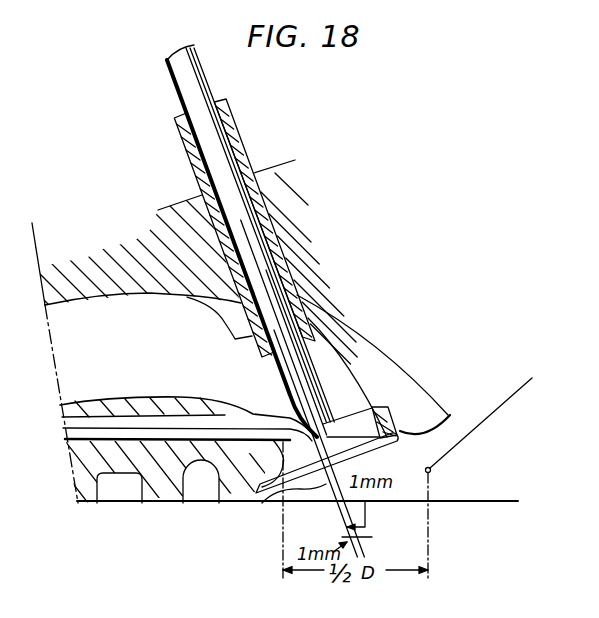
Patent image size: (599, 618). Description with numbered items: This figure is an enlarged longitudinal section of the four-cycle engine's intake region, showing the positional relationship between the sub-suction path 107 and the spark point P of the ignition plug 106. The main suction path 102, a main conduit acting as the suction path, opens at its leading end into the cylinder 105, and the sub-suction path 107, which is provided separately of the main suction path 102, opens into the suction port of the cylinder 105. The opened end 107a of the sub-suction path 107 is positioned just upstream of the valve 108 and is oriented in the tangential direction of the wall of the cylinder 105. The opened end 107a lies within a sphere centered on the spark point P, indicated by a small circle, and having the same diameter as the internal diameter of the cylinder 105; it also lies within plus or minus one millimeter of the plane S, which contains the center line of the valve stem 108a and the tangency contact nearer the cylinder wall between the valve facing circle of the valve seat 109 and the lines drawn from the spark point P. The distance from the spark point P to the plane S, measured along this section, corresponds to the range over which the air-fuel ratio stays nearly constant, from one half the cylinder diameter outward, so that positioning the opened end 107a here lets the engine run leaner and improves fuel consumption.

The main suction path 102 is at (75, 387).
The cylinder 105 is at (412, 493).
The ignition plug 106 is at (507, 401).
The sub-suction path 107 is at (178, 447).
The opened end 107a is at (329, 441).
The valve 108 is at (375, 449).
The valve stem 108a is at (207, 160).
The valve seat 109 is at (381, 407).
The spark point P is at (434, 471).
The plane S is at (272, 498).